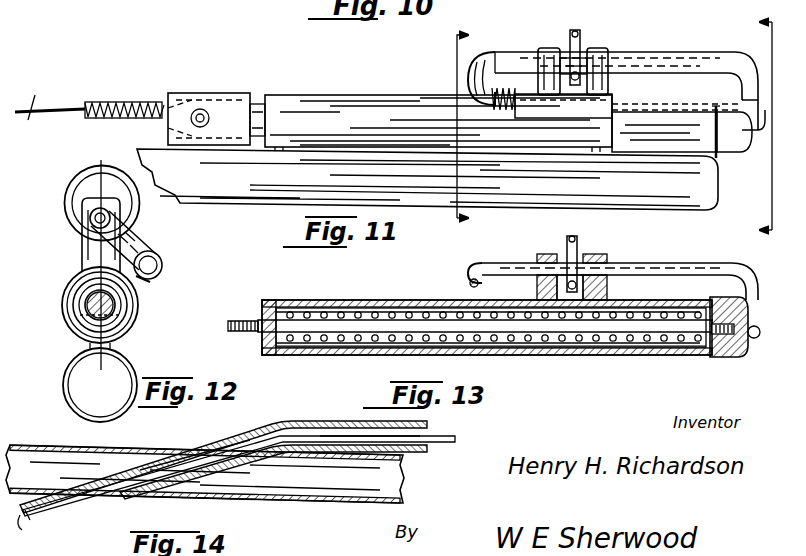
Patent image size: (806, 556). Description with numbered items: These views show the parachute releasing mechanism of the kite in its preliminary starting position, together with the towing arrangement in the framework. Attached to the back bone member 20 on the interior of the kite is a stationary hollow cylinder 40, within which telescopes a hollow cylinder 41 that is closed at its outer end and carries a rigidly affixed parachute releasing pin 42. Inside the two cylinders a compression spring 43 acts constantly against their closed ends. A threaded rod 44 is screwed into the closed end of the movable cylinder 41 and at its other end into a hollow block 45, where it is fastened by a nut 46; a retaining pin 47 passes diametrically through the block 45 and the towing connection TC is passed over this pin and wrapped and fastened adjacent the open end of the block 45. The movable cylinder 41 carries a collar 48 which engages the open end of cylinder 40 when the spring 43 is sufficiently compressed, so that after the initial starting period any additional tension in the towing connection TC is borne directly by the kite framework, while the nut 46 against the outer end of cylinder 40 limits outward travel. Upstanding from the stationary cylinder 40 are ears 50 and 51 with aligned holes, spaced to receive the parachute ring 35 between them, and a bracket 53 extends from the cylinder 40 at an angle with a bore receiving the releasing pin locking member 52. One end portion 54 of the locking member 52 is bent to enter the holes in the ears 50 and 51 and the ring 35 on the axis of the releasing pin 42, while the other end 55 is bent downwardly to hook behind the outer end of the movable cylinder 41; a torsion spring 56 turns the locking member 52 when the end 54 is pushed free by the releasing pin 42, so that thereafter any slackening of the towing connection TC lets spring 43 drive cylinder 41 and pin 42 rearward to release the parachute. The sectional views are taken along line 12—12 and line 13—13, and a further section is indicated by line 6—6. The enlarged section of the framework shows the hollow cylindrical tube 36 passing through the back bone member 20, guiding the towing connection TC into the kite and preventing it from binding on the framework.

In FIG. 11, the towing connection TC is at (52, 103).
In FIG. 14, the towing connection TC is at (474, 430).
In FIG. 11, the section line 6— 6 is at (755, 127).
In FIG. 11, the section line 12— 12 is at (478, 128).
In FIG. 12, the section line 13— 13 is at (103, 264).
In FIG. 11, the back bone member 20 is at (676, 212).
In FIG. 12, the back bone member 20 is at (60, 375).
In FIG. 14, the back bone member 20 is at (305, 505).
In FIG. 11, the ring 35 is at (580, 32).
In FIG. 12, the ring 35 is at (70, 188).
In FIG. 13, the ring 35 is at (577, 244).
In FIG. 14, the hollow cylindrical tube 36 is at (284, 421).
In FIG. 11, the stationary hollow cylinder 40 is at (355, 107).
In FIG. 12, the stationary hollow cylinder 40 is at (70, 313).
In FIG. 13, the stationary hollow cylinder 40 is at (358, 307).
In FIG. 11, the movable hollow cylinder 41 is at (712, 152).
In FIG. 12, the movable hollow cylinder 41 is at (62, 299).
In FIG. 13, the movable hollow cylinder 41 is at (662, 356).
In FIG. 11, the parachute releasing pin 42 is at (684, 66).
In FIG. 13, the parachute releasing pin 42 is at (652, 270).
In FIG. 12, the compression spring 43 is at (75, 329).
In FIG. 13, the compression spring 43 is at (300, 310).
In FIG. 13, the threaded rod 44 is at (565, 340).
In FIG. 11, the hollow block 45 is at (225, 96).
In FIG. 11, the nut 46 is at (258, 103).
In FIG. 11, the retaining pin 47 is at (200, 110).
In FIG. 11, the collar 48 is at (735, 135).
In FIG. 13, the collar 48 is at (712, 358).
In FIG. 11, the ear 50 is at (548, 48).
In FIG. 12, the ear 50 is at (82, 251).
In FIG. 13, the ear 50 is at (497, 262).
In FIG. 11, the ear 51 is at (608, 52).
In FIG. 13, the ear 51 is at (604, 262).
In FIG. 11, the releasing pin locking member 52 is at (675, 108).
In FIG. 11, the bracket 53 is at (600, 112).
In FIG. 12, the bracket 53 is at (148, 282).
In FIG. 11, the bent end portion of locking member 54 is at (585, 52).
In FIG. 12, the bent end portion of locking member 54 is at (138, 239).
In FIG. 13, the bent end portion of locking member 54 is at (543, 278).
In FIG. 11, the downwardly bent end of locking member 55 is at (760, 108).
In FIG. 13, the downwardly bent end of locking member 55 is at (760, 326).
In FIG. 11, the torsion spring 56 is at (490, 85).
In FIG. 12, the torsion spring 56 is at (165, 261).